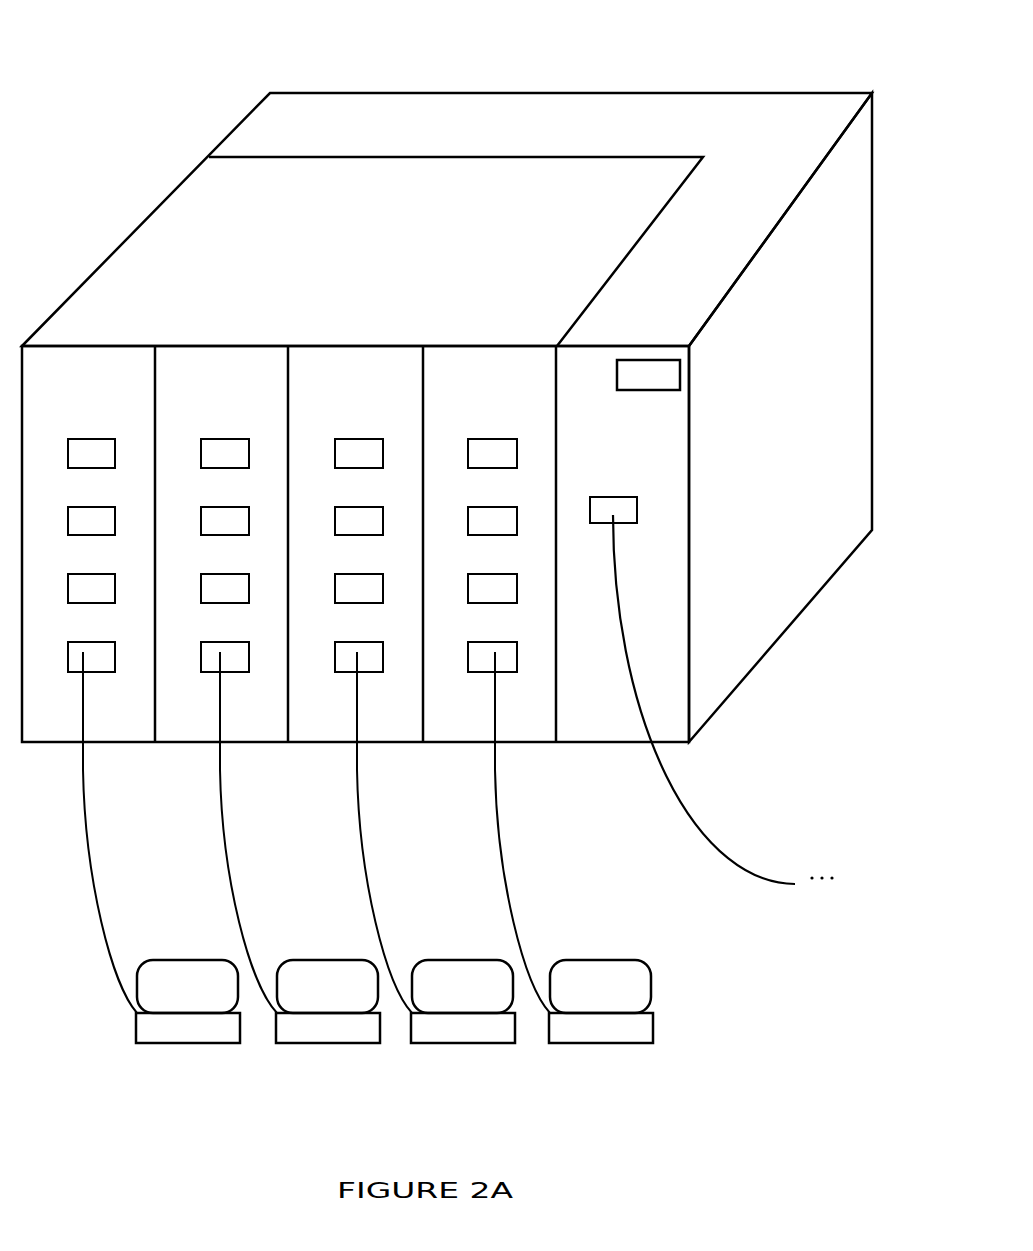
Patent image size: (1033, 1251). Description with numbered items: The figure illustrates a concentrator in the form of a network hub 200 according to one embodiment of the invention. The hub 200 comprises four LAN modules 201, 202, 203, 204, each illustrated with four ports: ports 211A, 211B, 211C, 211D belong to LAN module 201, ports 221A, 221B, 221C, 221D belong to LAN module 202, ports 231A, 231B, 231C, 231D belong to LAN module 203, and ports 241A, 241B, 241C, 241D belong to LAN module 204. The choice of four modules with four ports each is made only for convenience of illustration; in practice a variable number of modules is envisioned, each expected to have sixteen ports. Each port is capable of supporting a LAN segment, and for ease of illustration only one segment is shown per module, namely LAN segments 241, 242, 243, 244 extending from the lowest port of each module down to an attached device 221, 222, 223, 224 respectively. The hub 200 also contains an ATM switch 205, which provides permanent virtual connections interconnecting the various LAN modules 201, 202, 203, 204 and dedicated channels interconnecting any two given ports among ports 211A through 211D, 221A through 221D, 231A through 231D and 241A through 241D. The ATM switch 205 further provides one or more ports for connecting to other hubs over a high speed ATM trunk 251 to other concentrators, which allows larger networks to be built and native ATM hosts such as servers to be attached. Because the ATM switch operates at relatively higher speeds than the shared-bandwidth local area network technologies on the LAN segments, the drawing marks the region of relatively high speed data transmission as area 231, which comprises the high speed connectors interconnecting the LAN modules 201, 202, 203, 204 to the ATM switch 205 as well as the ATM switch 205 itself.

The network hub 200 is at (153, 154).
The area of relatively high speed data transmission 231 is at (509, 82).
The ATM switch 205 is at (663, 376).
The LAN module 201 is at (88, 544).
The LAN module 202 is at (221, 544).
The LAN module 203 is at (355, 544).
The LAN module 204 is at (489, 544).
The port 211A is at (88, 645).
The port 211B is at (88, 577).
The port 211C is at (88, 509).
The port 211D is at (88, 441).
The port 221A is at (221, 645).
The port 221B is at (221, 577).
The port 221C is at (221, 509).
The port 221D is at (221, 441).
The port 231A is at (358, 645).
The port 231B is at (358, 577).
The port 231C is at (358, 509).
The port 231D is at (358, 441).
The port 241A is at (491, 645).
The port 241B is at (491, 577).
The port 241C is at (491, 509).
The port 241D is at (491, 441).
The LAN segment 241 is at (132, 832).
The LAN segment 242 is at (273, 832).
The LAN segment 243 is at (412, 832).
The LAN segment 244 is at (550, 832).
The device 221 is at (188, 1026).
The device 222 is at (328, 1026).
The device 223 is at (463, 1026).
The device 224 is at (601, 1026).
The high speed ATM trunk 251 is at (743, 742).